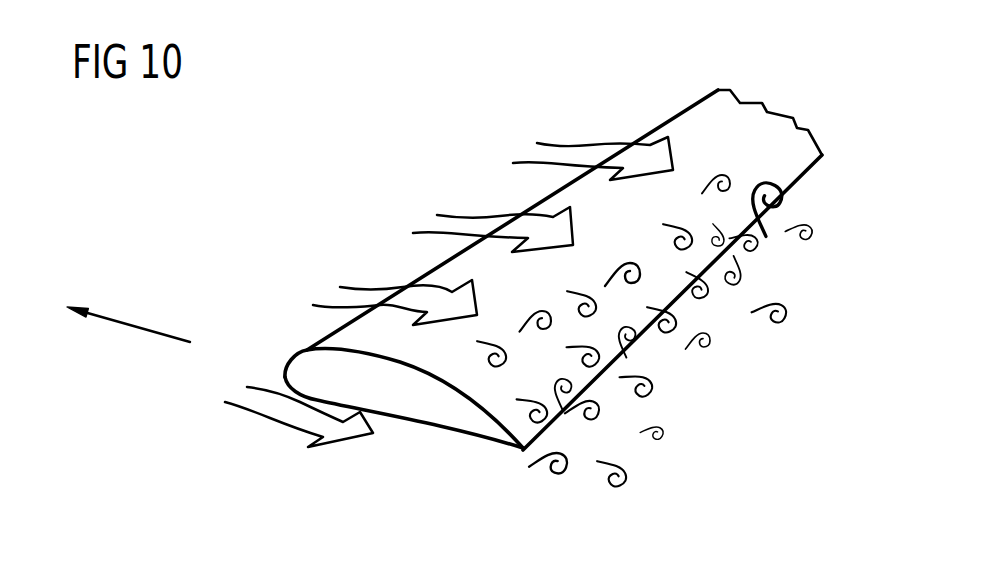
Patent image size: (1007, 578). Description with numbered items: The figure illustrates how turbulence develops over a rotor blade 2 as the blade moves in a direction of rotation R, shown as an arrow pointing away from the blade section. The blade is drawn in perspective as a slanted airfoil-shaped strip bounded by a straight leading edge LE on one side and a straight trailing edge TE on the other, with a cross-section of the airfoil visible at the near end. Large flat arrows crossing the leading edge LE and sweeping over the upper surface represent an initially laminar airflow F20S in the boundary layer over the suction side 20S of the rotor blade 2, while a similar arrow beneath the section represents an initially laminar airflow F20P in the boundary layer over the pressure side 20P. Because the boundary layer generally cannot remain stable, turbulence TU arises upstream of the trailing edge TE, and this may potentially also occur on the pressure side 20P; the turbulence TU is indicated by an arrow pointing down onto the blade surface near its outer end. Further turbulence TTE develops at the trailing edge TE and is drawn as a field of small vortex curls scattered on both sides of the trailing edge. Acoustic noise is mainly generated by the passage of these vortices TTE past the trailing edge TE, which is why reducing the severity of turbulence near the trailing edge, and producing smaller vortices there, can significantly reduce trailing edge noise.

The rotor blade 2 is at (571, 264).
The leading edge LE is at (683, 107).
The trailing edge TE is at (803, 173).
The turbulence TU is at (750, 115).
The trailing edge turbulence TTE is at (832, 280).
The direction of rotation R is at (145, 328).
The suction side 20S is at (347, 337).
The airflow over the suction side F20S is at (377, 297).
The pressure side 20P is at (430, 420).
The airflow over the pressure side F20P is at (283, 412).